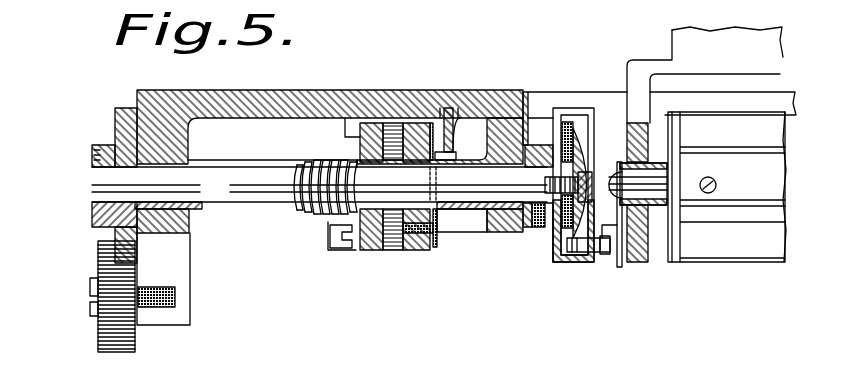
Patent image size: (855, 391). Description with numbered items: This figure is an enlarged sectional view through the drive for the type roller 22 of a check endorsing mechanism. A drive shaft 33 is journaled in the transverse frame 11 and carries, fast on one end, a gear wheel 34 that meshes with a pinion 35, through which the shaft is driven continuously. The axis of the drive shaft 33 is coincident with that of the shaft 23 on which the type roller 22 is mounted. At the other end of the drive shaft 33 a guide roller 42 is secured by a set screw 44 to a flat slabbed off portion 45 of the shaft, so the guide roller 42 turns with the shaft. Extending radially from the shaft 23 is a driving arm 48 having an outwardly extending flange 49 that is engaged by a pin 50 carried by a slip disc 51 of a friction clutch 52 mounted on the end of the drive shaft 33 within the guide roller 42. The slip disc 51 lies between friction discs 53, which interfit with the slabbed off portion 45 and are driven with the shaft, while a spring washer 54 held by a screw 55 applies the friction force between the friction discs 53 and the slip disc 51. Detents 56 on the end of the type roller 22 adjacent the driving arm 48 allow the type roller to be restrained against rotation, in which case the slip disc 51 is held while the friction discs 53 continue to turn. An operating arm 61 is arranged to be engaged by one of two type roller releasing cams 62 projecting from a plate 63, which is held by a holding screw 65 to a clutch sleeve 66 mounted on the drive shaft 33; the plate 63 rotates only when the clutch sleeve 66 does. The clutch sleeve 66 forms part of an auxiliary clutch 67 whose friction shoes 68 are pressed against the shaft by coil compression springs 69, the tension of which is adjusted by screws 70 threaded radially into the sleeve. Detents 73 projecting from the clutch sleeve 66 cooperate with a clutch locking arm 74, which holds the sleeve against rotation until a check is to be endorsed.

The transverse frame 11 is at (363, 98).
The type roller 22 is at (710, 266).
The shaft 23 is at (645, 180).
The drive shaft 33 is at (253, 201).
The gear wheel 34 is at (114, 121).
The pinion 35 is at (98, 258).
The guide roller 42 is at (551, 250).
The set screw 44 is at (535, 227).
The flat slabbed off portion 45 is at (537, 232).
The driving arm 48 is at (627, 256).
The outwardly extending flange 49 is at (607, 258).
The pin 50 is at (580, 262).
The slip disc 51 is at (578, 258).
The friction clutch 52 is at (582, 127).
The friction discs 53 is at (563, 135).
The spring washer 54 is at (588, 120).
The screw 55 is at (594, 173).
The detents 56 is at (653, 127).
The operating arm 61 is at (450, 120).
The type roller releasing cams 62 is at (470, 152).
The plate 63 is at (433, 248).
The holding screw 65 is at (440, 240).
The clutch sleeve 66 is at (417, 250).
The auxiliary clutch 67 is at (357, 265).
The friction shoes 68 is at (383, 162).
The coil compression springs 69 is at (413, 140).
The screws 70 is at (395, 123).
The detents 73 is at (350, 118).
The clutch locking arm 74 is at (328, 229).